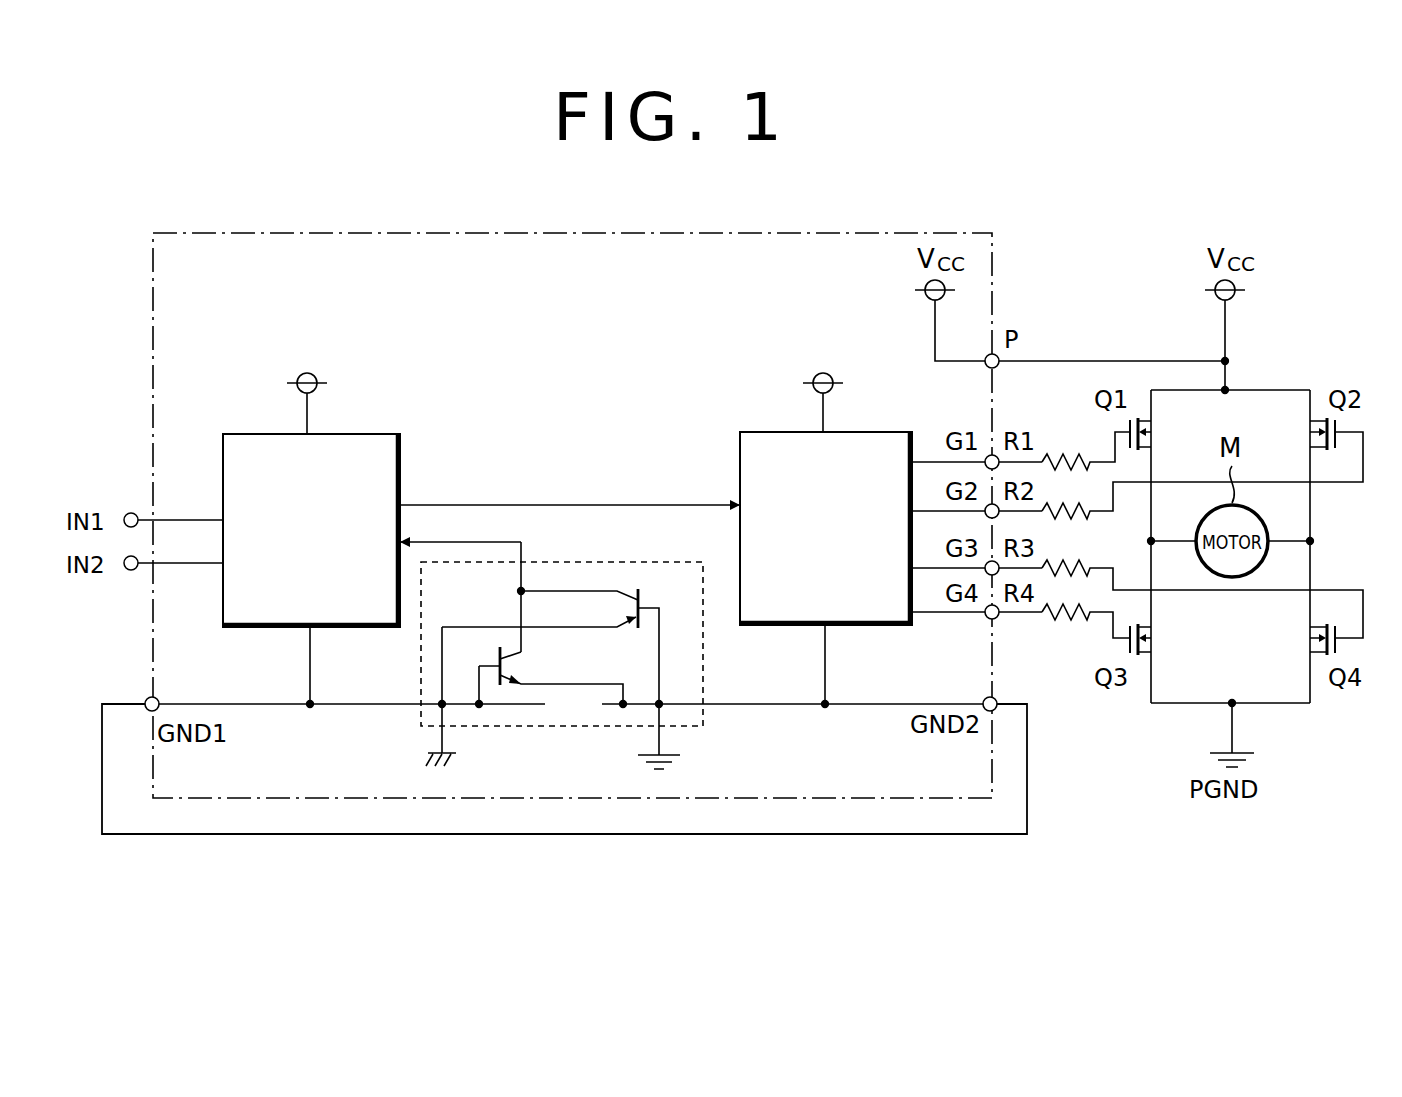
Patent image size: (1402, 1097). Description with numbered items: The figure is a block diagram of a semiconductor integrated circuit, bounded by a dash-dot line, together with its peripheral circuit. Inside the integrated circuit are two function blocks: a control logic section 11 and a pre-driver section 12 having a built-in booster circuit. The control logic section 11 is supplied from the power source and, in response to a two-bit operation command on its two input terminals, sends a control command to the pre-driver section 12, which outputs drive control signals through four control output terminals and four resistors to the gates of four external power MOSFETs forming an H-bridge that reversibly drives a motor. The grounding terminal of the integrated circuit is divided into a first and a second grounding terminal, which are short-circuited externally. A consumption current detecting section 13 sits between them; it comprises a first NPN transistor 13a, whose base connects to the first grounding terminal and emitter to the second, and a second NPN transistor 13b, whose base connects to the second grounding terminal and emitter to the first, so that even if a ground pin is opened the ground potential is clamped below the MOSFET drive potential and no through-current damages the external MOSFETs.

The control logic section 11 is at (378, 433).
The pre-driver section 12 is at (757, 432).
The consumption current detecting section 13 is at (562, 562).
The first NPN transistor 13a is at (512, 670).
The second NPN transistor 13b is at (643, 598).